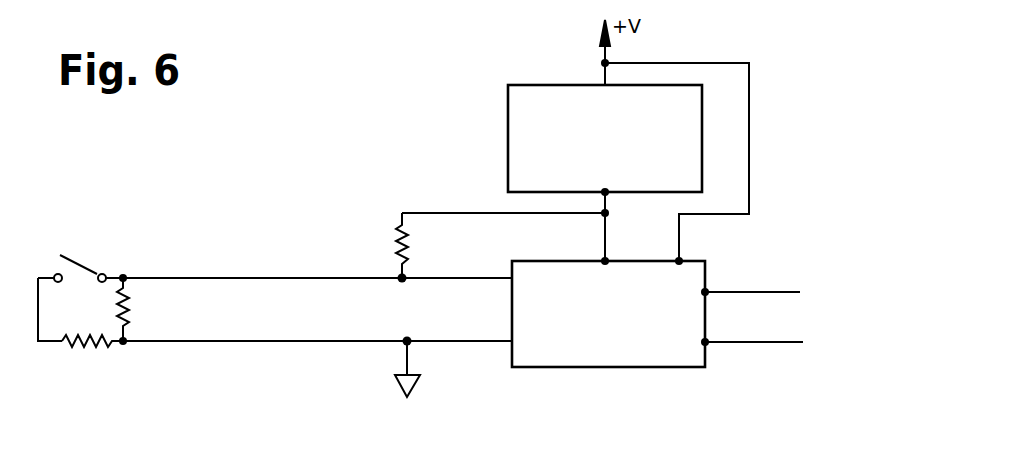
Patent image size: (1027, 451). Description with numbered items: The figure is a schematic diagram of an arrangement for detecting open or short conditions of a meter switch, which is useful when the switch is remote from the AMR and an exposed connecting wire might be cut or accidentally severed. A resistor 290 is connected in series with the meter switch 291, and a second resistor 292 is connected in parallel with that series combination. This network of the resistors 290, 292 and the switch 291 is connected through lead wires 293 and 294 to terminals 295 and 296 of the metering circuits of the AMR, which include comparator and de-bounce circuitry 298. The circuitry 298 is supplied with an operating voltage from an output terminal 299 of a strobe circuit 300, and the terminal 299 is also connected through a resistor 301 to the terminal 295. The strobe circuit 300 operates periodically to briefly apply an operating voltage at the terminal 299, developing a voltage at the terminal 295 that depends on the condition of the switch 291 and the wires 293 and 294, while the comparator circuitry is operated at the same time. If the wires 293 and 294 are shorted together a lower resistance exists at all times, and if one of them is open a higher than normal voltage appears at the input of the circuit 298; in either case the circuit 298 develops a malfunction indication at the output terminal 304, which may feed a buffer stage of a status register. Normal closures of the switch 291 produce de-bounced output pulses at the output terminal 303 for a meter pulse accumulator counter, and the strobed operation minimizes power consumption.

The resistor 290 is at (100, 345).
The meter switch 291 is at (82, 265).
The second resistor 292 is at (131, 315).
The lead wire 293 is at (263, 238).
The lead wire 294 is at (293, 344).
The terminal 295 is at (404, 277).
The terminal 296 is at (410, 345).
The comparator and de-bounce circuitry 298 is at (610, 369).
The output terminal 299 is at (607, 195).
The strobe circuit 300 is at (508, 112).
The resistor 301 is at (396, 243).
The output terminal 303 is at (736, 292).
The output terminal 304 is at (782, 342).